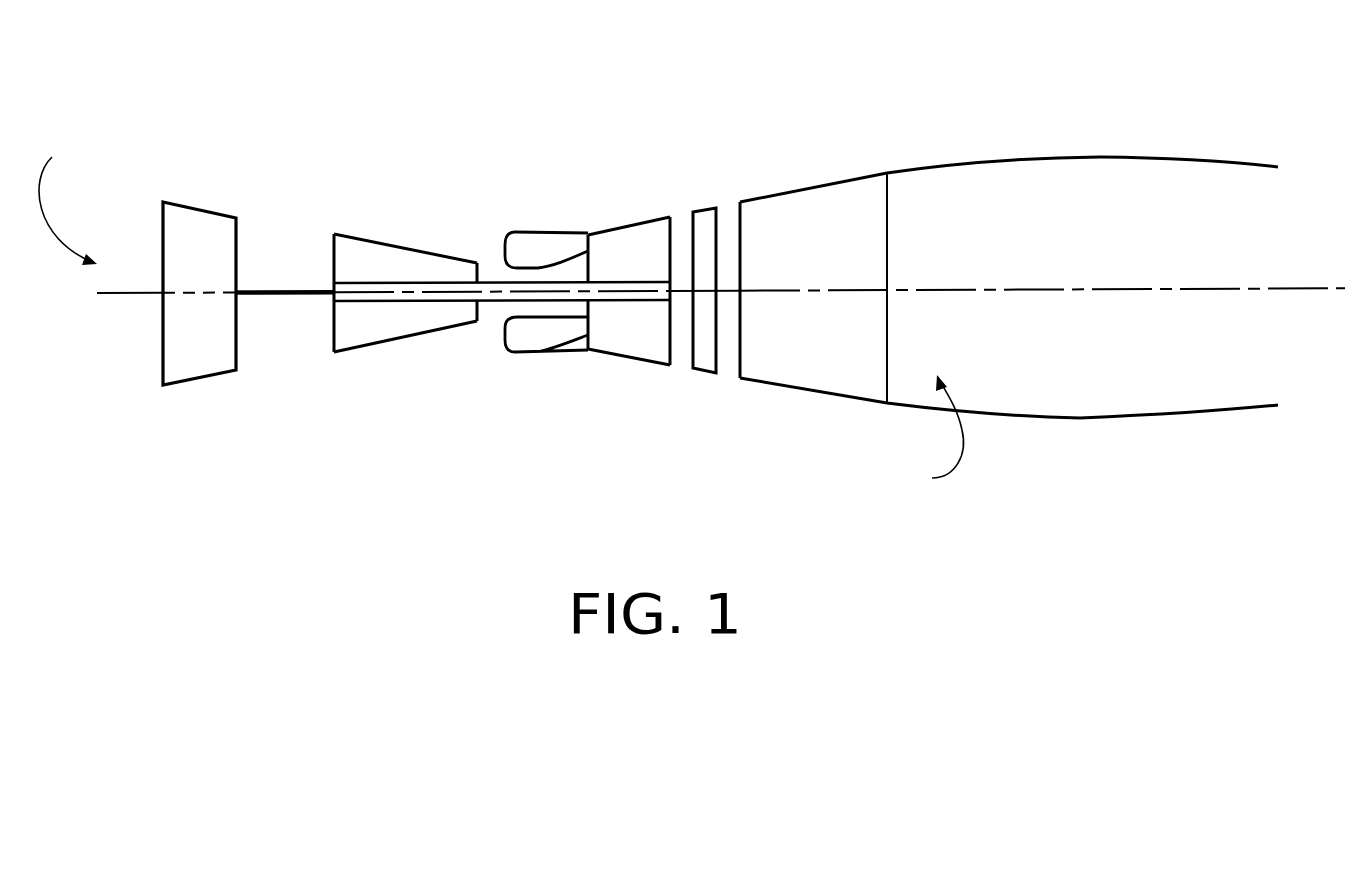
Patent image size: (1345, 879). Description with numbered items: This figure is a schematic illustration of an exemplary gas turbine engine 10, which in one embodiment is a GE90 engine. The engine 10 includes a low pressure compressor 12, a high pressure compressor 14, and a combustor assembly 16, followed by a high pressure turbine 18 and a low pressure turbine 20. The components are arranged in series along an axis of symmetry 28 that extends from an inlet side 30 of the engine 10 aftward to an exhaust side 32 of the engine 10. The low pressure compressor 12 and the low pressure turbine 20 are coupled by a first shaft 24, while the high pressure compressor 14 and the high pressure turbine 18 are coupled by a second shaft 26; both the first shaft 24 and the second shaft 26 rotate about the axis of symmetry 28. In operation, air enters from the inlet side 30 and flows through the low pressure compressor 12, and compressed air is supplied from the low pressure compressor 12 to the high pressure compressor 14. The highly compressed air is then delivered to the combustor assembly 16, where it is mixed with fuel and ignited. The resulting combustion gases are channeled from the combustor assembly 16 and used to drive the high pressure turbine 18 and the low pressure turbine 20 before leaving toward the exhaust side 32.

The gas turbine engine 10 is at (375, 105).
The low pressure compressor 12 is at (218, 374).
The high pressure compressor 14 is at (445, 328).
The combustor assembly 16 is at (537, 352).
The high pressure turbine 18 is at (642, 358).
The low pressure turbine 20 is at (702, 372).
The first shaft 24 is at (305, 295).
The second shaft 26 is at (497, 277).
The axis of symmetry 28 is at (1203, 290).
The inlet side 30 is at (71, 200).
The exhaust side 32 is at (925, 437).